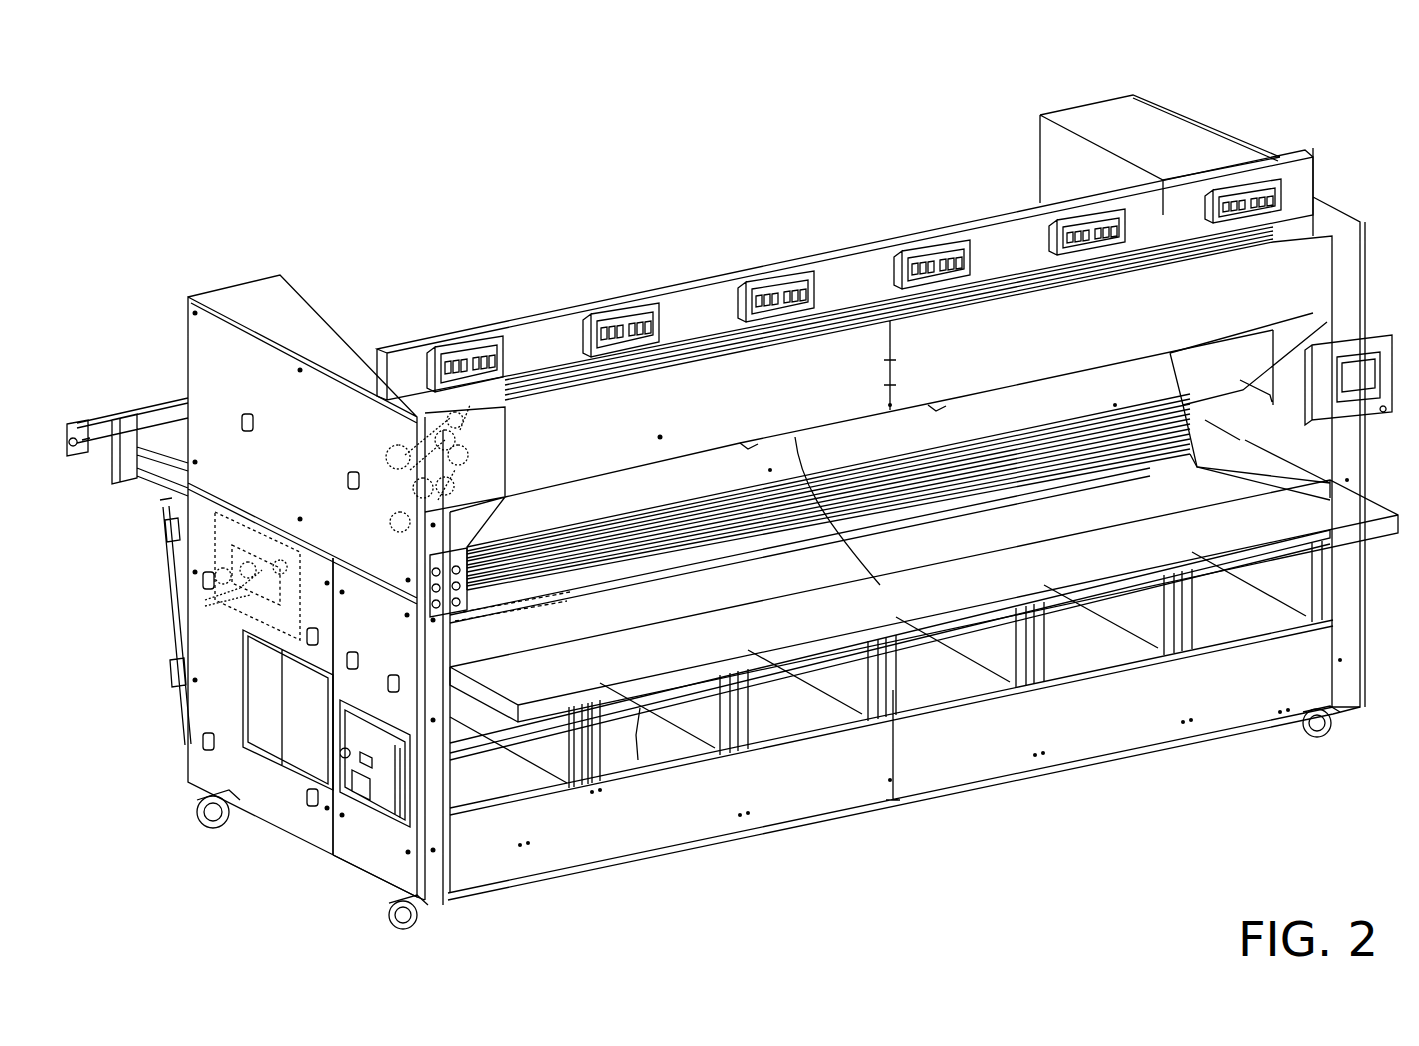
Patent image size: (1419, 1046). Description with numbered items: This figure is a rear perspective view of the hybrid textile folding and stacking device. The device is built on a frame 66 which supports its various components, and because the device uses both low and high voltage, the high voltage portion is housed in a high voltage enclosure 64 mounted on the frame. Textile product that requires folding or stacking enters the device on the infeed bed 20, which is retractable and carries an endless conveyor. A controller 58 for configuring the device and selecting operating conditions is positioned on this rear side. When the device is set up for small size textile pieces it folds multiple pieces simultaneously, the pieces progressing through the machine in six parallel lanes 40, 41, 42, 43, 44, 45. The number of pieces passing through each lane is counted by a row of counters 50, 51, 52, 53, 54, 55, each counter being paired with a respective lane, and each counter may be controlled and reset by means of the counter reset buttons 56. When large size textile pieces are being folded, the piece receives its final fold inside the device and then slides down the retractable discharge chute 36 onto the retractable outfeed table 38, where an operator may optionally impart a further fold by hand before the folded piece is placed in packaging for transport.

The infeed bed 20 is at (72, 412).
The retractable discharge chute 36 is at (1200, 490).
The retractable outfeed table 38 is at (1330, 515).
The lane 40 is at (500, 773).
The lane 41 is at (660, 752).
The lane 42 is at (815, 720).
The lane 43 is at (952, 680).
The lane 44 is at (1090, 652).
The lane 45 is at (1228, 623).
The counter 50 is at (487, 360).
The counter 51 is at (648, 328).
The counter 52 is at (805, 292).
The counter 53 is at (957, 258).
The counter 54 is at (1118, 228).
The counter 55 is at (1270, 198).
The counter reset buttons 56 is at (455, 578).
The controller 58 is at (1360, 398).
The high voltage enclosure 64 is at (353, 778).
The frame 66 is at (375, 855).